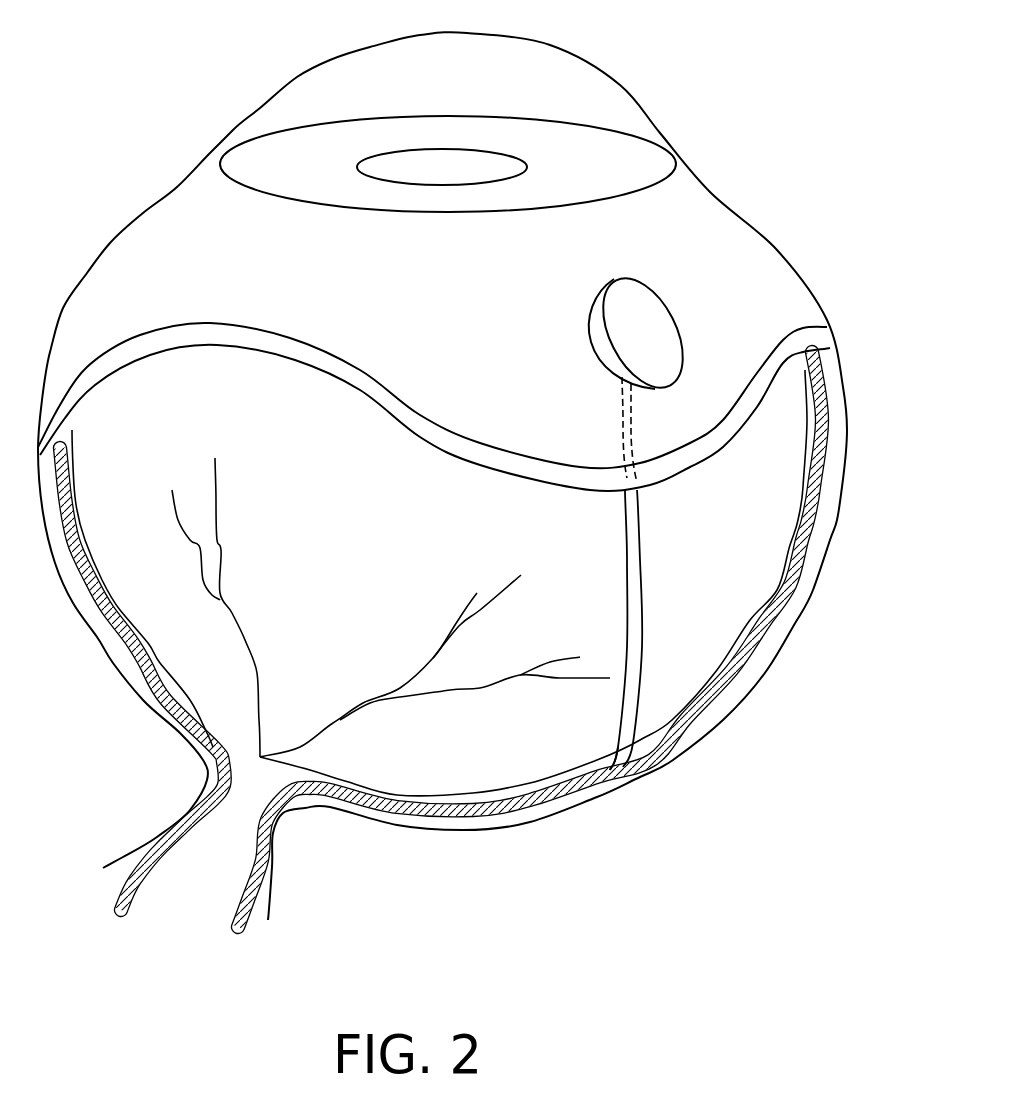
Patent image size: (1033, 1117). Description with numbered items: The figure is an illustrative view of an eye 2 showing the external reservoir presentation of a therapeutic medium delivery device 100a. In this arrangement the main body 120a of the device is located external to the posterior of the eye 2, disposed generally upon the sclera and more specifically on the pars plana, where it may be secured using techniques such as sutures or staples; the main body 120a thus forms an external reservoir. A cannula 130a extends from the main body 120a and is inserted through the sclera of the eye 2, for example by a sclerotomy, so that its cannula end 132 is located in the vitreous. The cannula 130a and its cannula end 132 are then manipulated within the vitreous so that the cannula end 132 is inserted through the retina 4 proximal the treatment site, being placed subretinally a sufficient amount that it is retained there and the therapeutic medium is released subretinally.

The eye 2 is at (758, 53).
The retina 4 is at (473, 793).
The therapeutic medium delivery device 100a is at (713, 317).
The main body 120a is at (605, 320).
The cannula 130a is at (640, 545).
The cannula end 132 is at (597, 740).